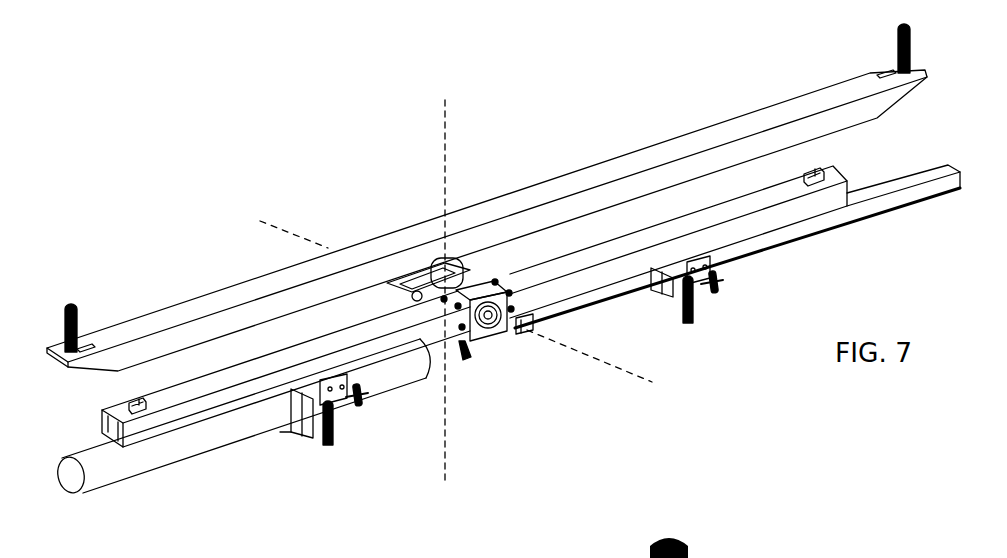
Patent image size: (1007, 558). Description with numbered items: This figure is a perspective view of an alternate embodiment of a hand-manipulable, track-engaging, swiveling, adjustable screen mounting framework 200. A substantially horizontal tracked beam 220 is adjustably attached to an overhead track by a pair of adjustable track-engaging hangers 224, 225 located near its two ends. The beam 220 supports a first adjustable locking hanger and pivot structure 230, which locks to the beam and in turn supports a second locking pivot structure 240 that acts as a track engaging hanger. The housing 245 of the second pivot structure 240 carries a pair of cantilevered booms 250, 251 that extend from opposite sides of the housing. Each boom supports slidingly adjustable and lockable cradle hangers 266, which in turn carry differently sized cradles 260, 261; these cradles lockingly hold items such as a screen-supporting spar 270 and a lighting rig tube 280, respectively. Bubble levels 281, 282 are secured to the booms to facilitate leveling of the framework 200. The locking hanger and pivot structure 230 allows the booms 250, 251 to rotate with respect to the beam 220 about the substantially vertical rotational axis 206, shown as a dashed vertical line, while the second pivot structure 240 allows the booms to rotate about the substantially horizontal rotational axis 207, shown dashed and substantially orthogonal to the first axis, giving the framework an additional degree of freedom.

The screen mounting framework 200 is at (126, 170).
The rotational axis 206 is at (445, 142).
The second rotational axis 207 is at (283, 228).
The beam 220 is at (652, 148).
The track-engaging hanger 224 is at (80, 317).
The track-engaging hanger 225 is at (898, 42).
The locking hanger and pivot structure 230 is at (388, 299).
The second locking pivot structure 240 is at (508, 350).
The housing 245 is at (483, 287).
The cantilevered boom 250 is at (153, 428).
The cantilevered boom 251 is at (783, 220).
The cradle 260 is at (312, 425).
The cradle 261 is at (670, 297).
The cradle hanger 266 is at (318, 390).
The screen-supporting spar 270 is at (922, 198).
The lighting rig tube 280 is at (125, 478).
The bubble level 281 is at (127, 402).
The bubble level 282 is at (822, 168).